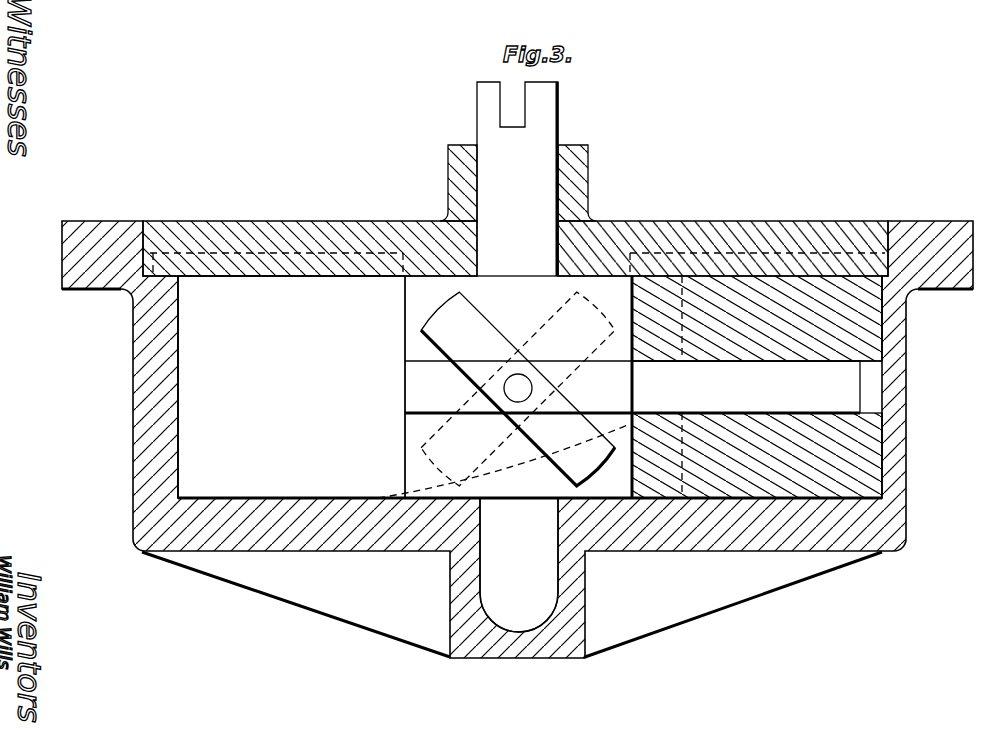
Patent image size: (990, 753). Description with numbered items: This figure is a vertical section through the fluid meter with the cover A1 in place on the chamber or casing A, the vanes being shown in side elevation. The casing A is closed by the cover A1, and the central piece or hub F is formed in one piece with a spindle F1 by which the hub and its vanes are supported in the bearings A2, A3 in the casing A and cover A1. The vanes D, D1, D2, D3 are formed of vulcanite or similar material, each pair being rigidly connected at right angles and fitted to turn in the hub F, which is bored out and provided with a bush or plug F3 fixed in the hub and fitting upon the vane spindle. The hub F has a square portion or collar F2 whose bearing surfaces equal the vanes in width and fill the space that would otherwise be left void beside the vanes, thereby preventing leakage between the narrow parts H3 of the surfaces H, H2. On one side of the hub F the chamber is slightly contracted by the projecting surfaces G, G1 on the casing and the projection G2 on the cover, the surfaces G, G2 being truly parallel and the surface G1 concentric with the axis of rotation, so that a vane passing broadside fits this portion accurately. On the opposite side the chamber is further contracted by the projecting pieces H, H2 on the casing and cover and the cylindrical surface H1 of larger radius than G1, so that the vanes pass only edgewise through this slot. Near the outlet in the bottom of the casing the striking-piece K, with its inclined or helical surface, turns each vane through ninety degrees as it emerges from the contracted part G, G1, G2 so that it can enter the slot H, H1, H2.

The chamber or casing A is at (517, 439).
The cover A1 is at (515, 238).
The bearing A2 is at (585, 599).
The bearing A3 is at (588, 183).
The vane D is at (291, 387).
The vane D1 is at (518, 389).
The vane D2 is at (746, 387).
The vane D3 is at (518, 389).
The central piece or hub F is at (518, 387).
The spindle F1 is at (517, 288).
The square portion or collar F2 is at (643, 387).
The bush or plug F3 is at (519, 565).
The projecting surface G is at (330, 498).
The projecting surface G1 is at (178, 383).
The projection G2 is at (287, 277).
The projecting piece H is at (757, 455).
The projecting surface H1 is at (882, 455).
The projecting piece H2 is at (757, 318).
The narrow parts H3 is at (882, 311).
The projection or striking-piece K is at (460, 484).